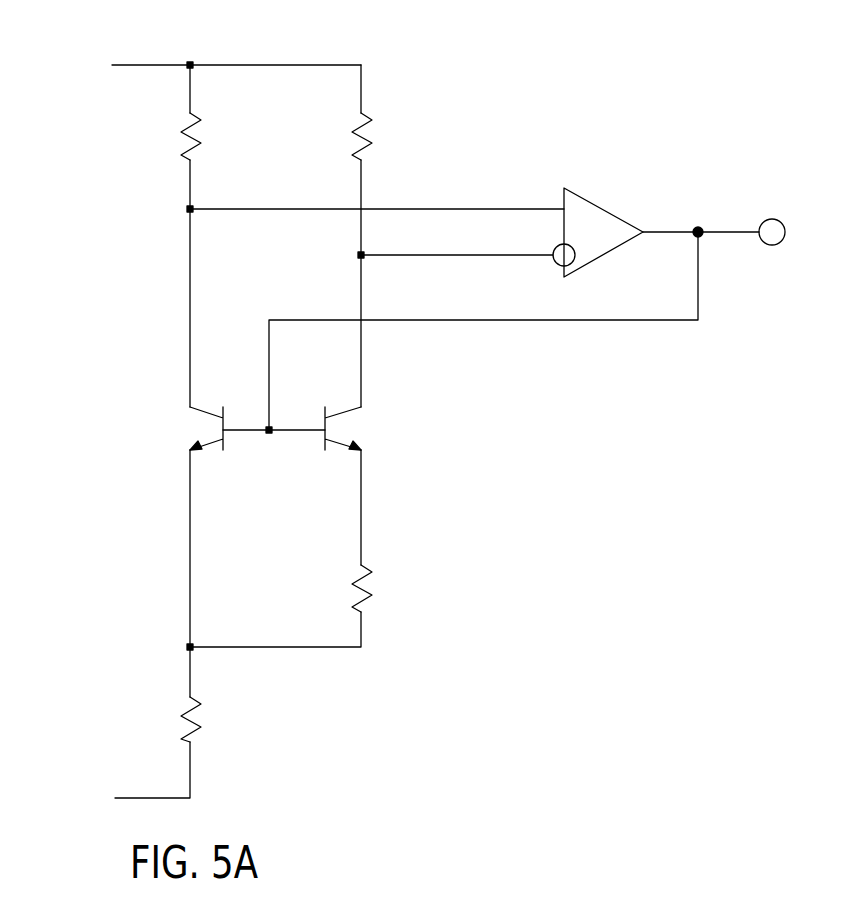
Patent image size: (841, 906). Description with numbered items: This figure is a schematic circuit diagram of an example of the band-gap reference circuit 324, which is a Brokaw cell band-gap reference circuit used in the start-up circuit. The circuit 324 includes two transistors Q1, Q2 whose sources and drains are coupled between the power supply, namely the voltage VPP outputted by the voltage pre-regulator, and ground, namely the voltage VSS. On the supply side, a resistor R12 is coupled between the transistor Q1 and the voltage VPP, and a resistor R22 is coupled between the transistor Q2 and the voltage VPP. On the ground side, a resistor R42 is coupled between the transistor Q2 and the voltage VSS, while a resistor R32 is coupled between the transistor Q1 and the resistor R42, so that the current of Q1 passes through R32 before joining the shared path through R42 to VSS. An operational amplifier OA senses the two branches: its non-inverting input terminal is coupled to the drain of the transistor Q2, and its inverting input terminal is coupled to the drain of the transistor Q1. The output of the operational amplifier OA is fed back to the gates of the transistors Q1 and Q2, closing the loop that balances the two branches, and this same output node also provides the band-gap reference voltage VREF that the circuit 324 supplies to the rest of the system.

The band-gap reference circuit 324 is at (500, 91).
The resistor R22 is at (210, 136).
The resistor R12 is at (379, 136).
The resistor R32 is at (377, 586).
The resistor R42 is at (208, 716).
The transistor Q1 is at (357, 421).
The transistor Q2 is at (192, 421).
The operational amplifier OA is at (582, 195).
The voltage VPP is at (215, 66).
The voltage Vss VSS is at (132, 779).
The band-gap reference voltage Vref VREF is at (728, 214).